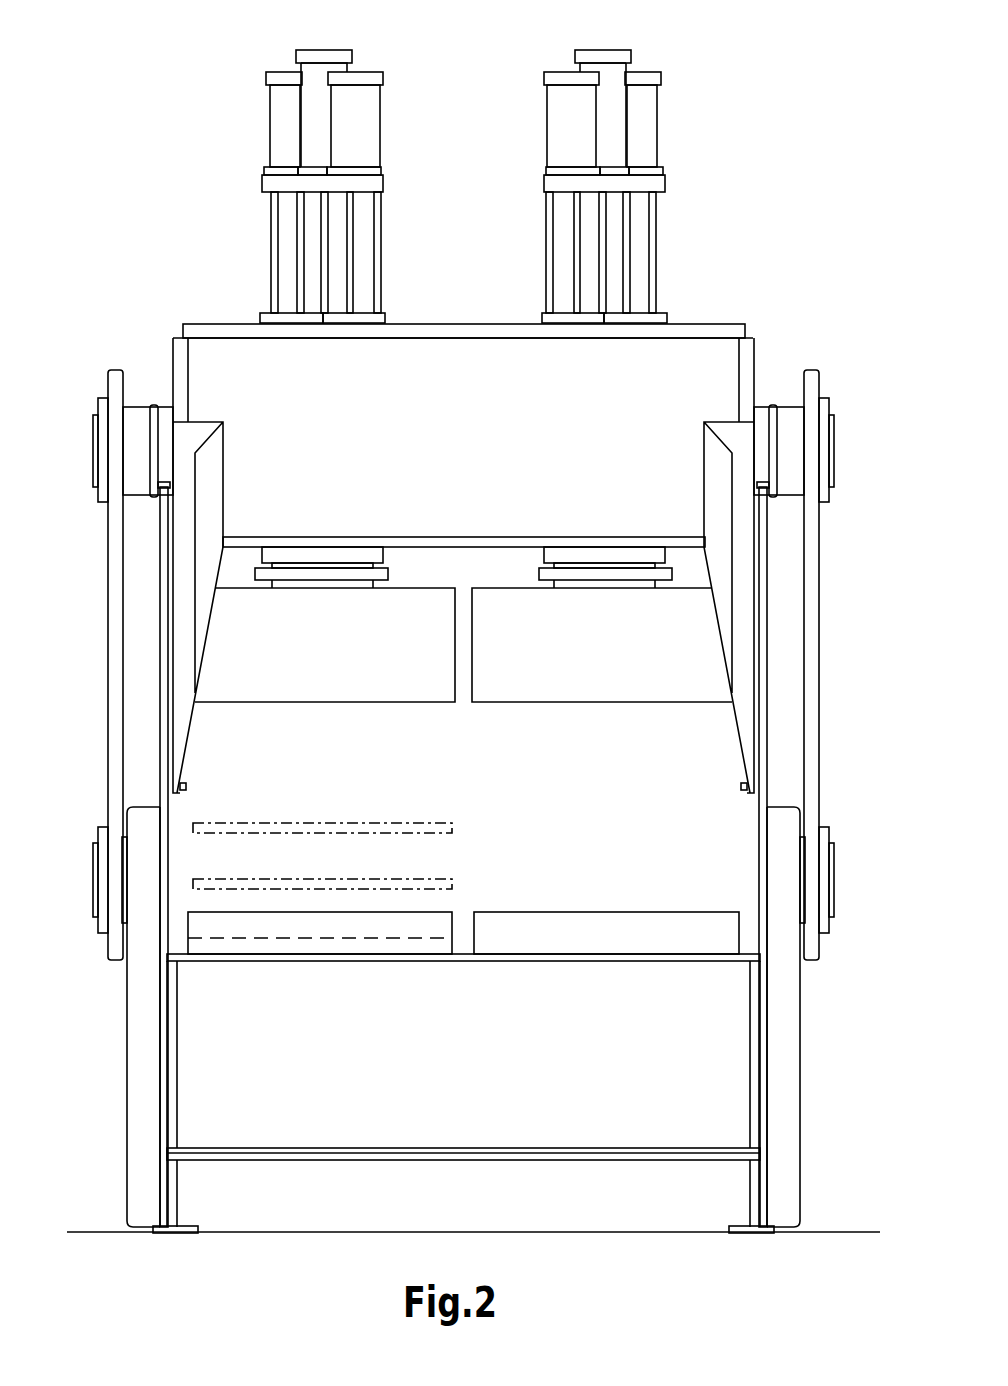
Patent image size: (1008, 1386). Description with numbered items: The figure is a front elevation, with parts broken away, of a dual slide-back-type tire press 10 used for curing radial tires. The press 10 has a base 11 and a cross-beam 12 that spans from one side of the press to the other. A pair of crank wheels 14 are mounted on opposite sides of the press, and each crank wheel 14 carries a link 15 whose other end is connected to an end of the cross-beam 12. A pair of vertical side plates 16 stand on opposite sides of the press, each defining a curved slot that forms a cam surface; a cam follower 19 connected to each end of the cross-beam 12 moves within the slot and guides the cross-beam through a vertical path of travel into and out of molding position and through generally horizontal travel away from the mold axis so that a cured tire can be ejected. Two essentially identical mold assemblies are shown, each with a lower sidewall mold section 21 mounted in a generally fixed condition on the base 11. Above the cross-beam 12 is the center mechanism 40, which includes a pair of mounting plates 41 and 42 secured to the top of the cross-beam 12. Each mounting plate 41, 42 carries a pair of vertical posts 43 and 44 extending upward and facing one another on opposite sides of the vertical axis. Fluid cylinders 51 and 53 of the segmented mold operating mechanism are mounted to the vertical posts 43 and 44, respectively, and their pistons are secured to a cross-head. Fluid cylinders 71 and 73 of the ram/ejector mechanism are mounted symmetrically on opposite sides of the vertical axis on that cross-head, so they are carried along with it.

The dual slide-back-type tire press 10 is at (133, 225).
The base 11 is at (457, 1098).
The cross-beam 12 is at (467, 475).
The crank wheel 14 is at (127, 1028).
The link 15 is at (115, 582).
The vertical side plate 16 is at (160, 547).
The cam follower 19 is at (167, 410).
The lower sidewall mold section 21 is at (537, 935).
The center mechanism 40 is at (593, 42).
The mounting plate 41 is at (387, 321).
The mounting plate 42 is at (270, 318).
The vertical post 43 is at (285, 211).
The vertical post 44 is at (312, 255).
The fluid cylinder 51 is at (372, 132).
The fluid cylinder 53 is at (280, 108).
The fluid cylinder 71 is at (316, 136).
The fluid cylinder 73 is at (613, 140).